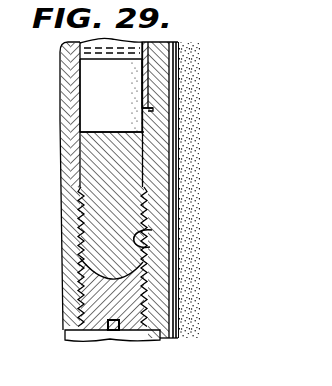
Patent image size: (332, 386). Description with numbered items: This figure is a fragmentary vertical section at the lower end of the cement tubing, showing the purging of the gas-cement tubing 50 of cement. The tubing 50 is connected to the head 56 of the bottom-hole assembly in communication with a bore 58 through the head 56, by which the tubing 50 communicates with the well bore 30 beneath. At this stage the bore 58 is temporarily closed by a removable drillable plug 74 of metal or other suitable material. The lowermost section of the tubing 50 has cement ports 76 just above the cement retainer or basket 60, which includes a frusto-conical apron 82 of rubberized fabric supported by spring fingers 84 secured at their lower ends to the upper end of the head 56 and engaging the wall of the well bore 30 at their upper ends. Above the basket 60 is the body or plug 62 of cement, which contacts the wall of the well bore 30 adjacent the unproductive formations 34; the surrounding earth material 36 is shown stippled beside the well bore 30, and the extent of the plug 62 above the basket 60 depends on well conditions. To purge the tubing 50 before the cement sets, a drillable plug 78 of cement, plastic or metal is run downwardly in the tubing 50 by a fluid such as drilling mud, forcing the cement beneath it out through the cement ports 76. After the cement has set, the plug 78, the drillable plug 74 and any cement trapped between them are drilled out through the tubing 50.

The well bore 30 is at (175, 123).
The unproductive formations 34 is at (183, 82).
The earth formation 36 is at (192, 304).
The gas-cement tubing 50 is at (152, 167).
The head 56 is at (156, 283).
The bore 58 is at (150, 232).
The cement retainer or basket 60 is at (173, 136).
The body or plug of cement 62 is at (165, 43).
The drillable plug 74 is at (103, 332).
The cement ports 76 is at (148, 108).
The drillable plug 78 is at (90, 105).
The frusto-conical apron 82 is at (178, 45).
The spring fingers 84 is at (179, 62).